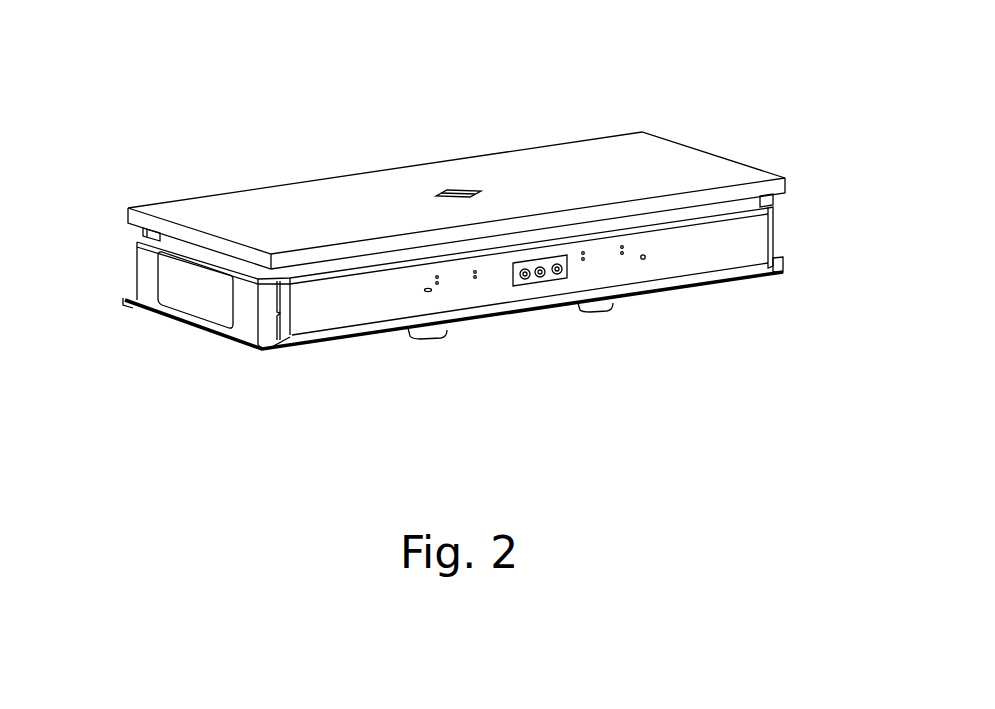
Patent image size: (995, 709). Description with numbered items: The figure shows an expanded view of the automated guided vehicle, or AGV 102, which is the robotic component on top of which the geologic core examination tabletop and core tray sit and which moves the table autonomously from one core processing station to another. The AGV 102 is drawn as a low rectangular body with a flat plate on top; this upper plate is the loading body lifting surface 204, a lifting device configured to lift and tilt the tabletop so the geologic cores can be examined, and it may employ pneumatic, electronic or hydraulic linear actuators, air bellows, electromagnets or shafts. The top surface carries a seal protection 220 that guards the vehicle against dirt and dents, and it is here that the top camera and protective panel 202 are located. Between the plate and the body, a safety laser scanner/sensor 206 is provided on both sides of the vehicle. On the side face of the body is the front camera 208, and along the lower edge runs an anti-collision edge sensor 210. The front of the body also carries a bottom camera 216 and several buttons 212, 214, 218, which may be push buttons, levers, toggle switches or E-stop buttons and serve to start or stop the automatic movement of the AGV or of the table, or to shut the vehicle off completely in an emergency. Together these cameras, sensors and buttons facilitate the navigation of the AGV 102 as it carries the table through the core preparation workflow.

The automated guided vehicle (AGV) 102 is at (816, 78).
The top camera and protective panel 202 is at (450, 190).
The loading body lifting surface 204 is at (257, 210).
The safety laser scanner/sensor 206 is at (143, 232).
The front camera 208 is at (180, 294).
The anti-collision edge sensor 210 is at (213, 327).
The button 212 is at (528, 279).
The button 214 is at (543, 277).
The bottom camera 216 is at (562, 274).
The button 218 is at (568, 270).
The seal protection 220 is at (675, 217).